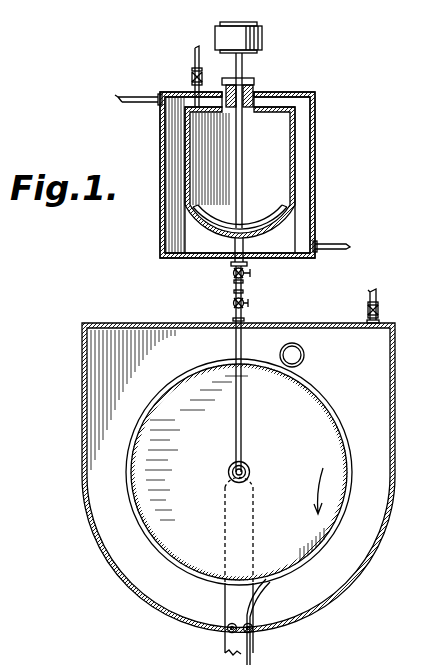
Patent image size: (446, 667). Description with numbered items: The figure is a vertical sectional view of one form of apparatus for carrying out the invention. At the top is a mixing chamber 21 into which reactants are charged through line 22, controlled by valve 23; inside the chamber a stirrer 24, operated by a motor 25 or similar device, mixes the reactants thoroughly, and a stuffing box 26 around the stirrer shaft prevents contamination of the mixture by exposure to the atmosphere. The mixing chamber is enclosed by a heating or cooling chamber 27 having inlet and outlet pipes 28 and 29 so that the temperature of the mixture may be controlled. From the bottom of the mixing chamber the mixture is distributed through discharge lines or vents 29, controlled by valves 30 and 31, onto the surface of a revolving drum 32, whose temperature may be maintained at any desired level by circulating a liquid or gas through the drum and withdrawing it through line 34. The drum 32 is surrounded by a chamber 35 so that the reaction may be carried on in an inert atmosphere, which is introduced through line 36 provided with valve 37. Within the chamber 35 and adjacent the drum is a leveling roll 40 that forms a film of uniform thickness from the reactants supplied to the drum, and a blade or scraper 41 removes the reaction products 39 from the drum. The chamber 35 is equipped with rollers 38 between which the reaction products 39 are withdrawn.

The mixing chamber 21 is at (295, 108).
The line 22 is at (194, 60).
The valve 23 is at (190, 77).
The stirrer 24 is at (243, 186).
The motor 25 is at (262, 44).
The stuffing box 26 is at (254, 88).
The heating or cooling chamber 27 is at (316, 166).
The inlet and outlet pipe 28 is at (330, 245).
The discharge line or vent 29 is at (123, 102).
The valve 30 is at (232, 274).
The valve 31 is at (233, 304).
The revolving drum 32 is at (136, 423).
The line 34 is at (242, 446).
The chamber 35 is at (396, 397).
The line 36 is at (376, 292).
The valve 37 is at (379, 310).
The rollers 38 is at (229, 625).
The reaction products 39 is at (251, 660).
The roll 40 is at (305, 357).
The blade or scraper 41 is at (238, 600).